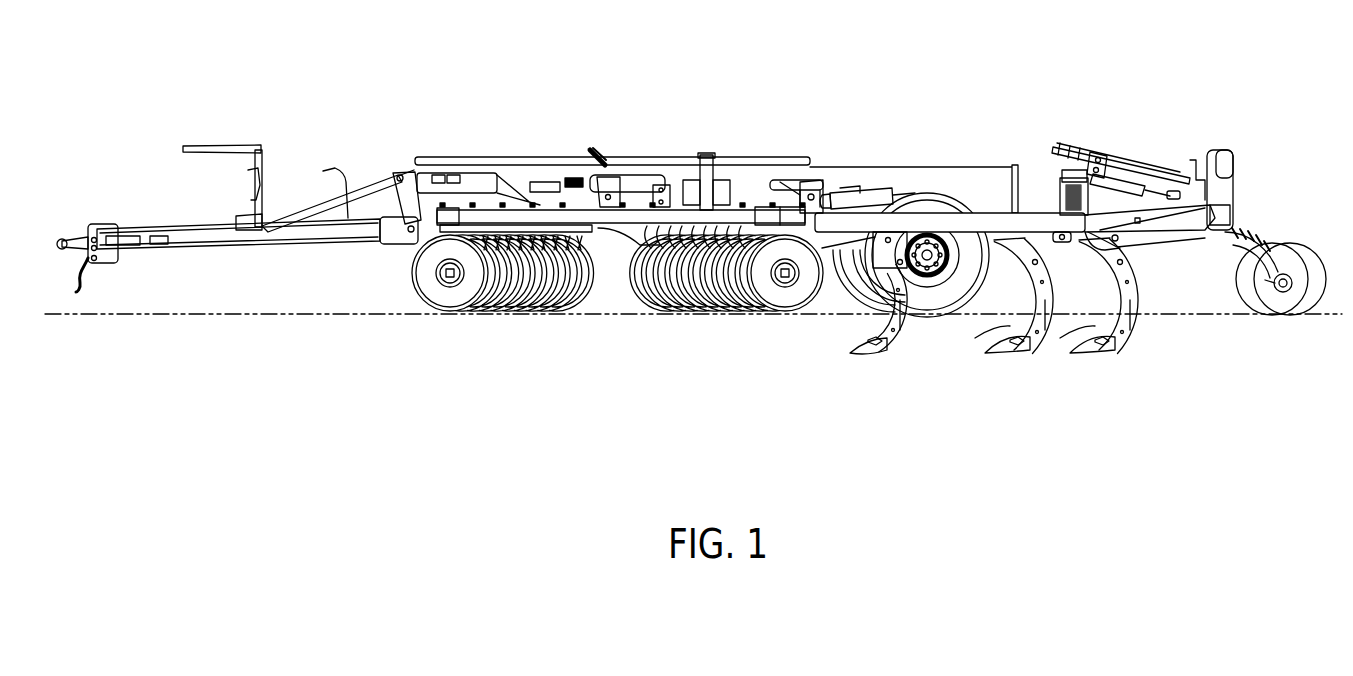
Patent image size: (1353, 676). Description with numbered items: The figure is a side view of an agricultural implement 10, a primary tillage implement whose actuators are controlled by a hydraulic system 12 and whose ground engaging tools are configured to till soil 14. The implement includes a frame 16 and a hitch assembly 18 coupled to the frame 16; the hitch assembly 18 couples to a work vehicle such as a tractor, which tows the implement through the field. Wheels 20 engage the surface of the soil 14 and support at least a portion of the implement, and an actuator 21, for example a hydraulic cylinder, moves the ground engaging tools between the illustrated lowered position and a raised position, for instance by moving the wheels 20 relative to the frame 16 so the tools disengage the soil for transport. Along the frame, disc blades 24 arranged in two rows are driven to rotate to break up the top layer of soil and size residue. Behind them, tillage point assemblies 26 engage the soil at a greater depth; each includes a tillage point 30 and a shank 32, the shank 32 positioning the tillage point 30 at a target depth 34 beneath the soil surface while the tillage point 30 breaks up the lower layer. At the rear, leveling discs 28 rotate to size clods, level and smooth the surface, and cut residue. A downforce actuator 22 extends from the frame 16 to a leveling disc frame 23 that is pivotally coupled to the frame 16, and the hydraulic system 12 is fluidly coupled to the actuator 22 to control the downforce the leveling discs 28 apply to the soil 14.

The agricultural implement 10 is at (437, 120).
The hydraulic system 12 is at (1120, 165).
The soil 14 is at (188, 312).
The frame 16 is at (947, 220).
The hitch assembly 18 is at (290, 246).
The wheels 20 is at (928, 202).
The actuator 21 is at (857, 200).
The downforce actuator 22 is at (866, 178).
The leveling disc frame 23 is at (1200, 197).
The disc blades 24 is at (505, 326).
The tillage point assemblies 26 is at (998, 362).
The leveling discs 28 is at (1313, 322).
The tillage point 30 is at (857, 358).
The shank 32 is at (904, 336).
The target depth 34 is at (847, 355).